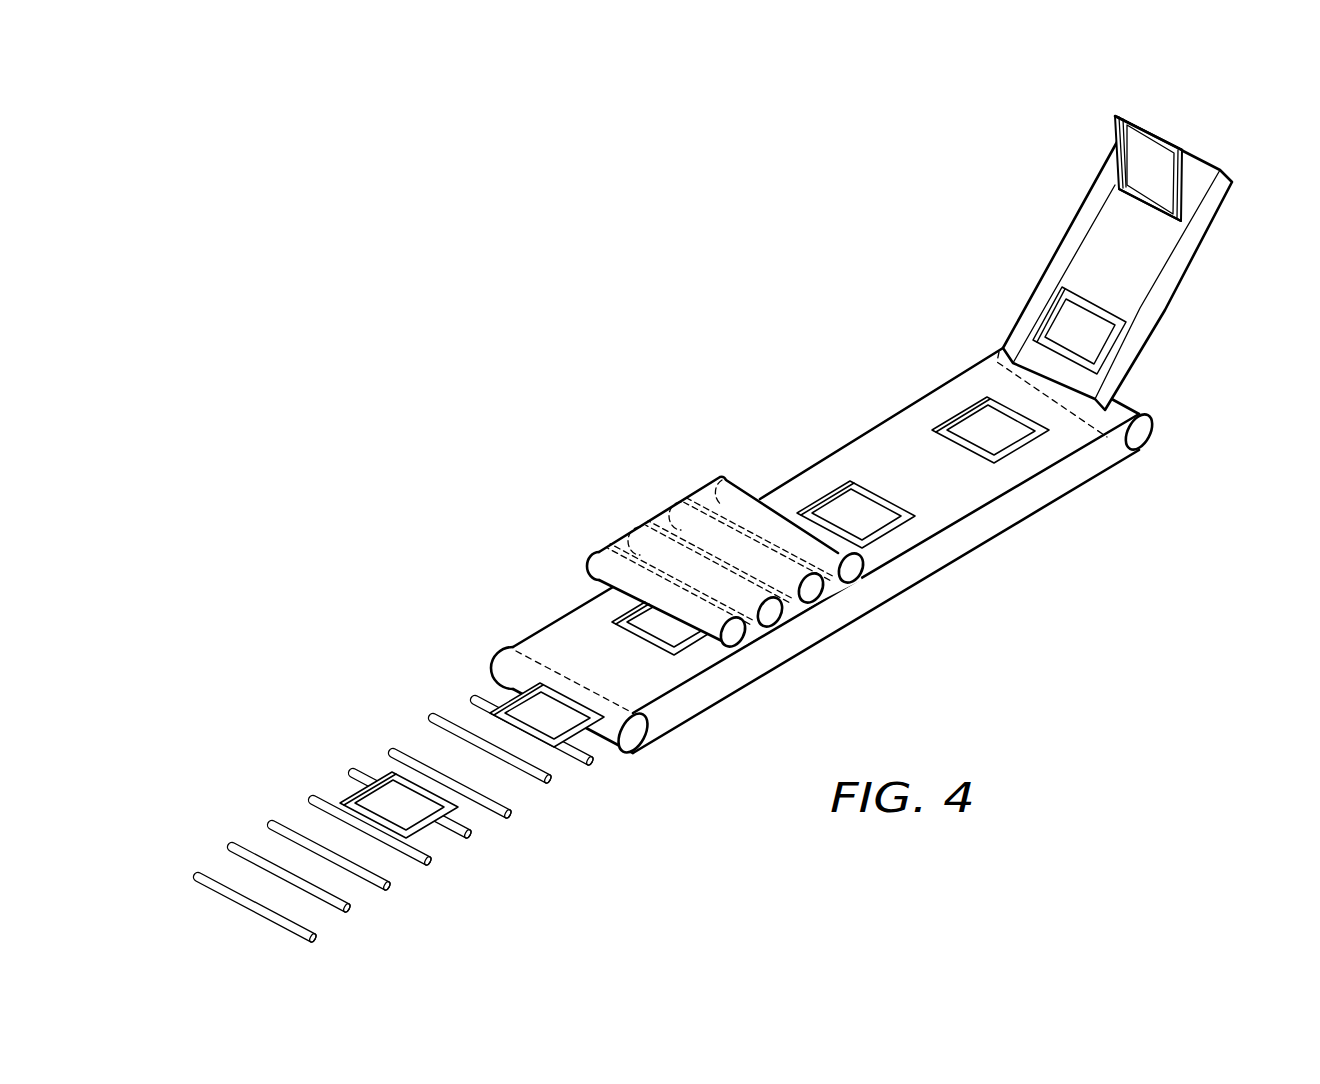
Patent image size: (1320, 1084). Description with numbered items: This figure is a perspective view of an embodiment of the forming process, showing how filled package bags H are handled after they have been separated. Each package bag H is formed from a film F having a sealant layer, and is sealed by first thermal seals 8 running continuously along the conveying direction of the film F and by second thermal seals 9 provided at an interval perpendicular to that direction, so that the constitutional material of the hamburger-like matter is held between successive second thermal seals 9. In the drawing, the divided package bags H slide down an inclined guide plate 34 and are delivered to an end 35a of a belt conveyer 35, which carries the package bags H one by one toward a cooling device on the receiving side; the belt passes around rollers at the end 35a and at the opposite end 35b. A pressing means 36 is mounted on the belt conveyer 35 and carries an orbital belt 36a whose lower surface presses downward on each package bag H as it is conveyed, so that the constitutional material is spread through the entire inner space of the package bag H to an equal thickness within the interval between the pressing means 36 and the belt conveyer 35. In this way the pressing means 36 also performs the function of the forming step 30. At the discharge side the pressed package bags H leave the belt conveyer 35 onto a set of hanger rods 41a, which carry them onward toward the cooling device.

The forming step 30 is at (709, 459).
The guide plate 34 is at (1085, 257).
The belt conveyer 35 is at (913, 542).
The end of belt conveyer 35a is at (1123, 413).
The conveyor belt roller (loading end) 35b is at (532, 663).
The pressing means 36 is at (727, 542).
The orbital belt 36a is at (693, 488).
The hanger rods 41a is at (279, 800).
The first thermal seals 8 is at (1125, 158).
The second thermal seals 9 is at (1143, 137).
The film F is at (1134, 147).
The package bags H is at (1157, 155).